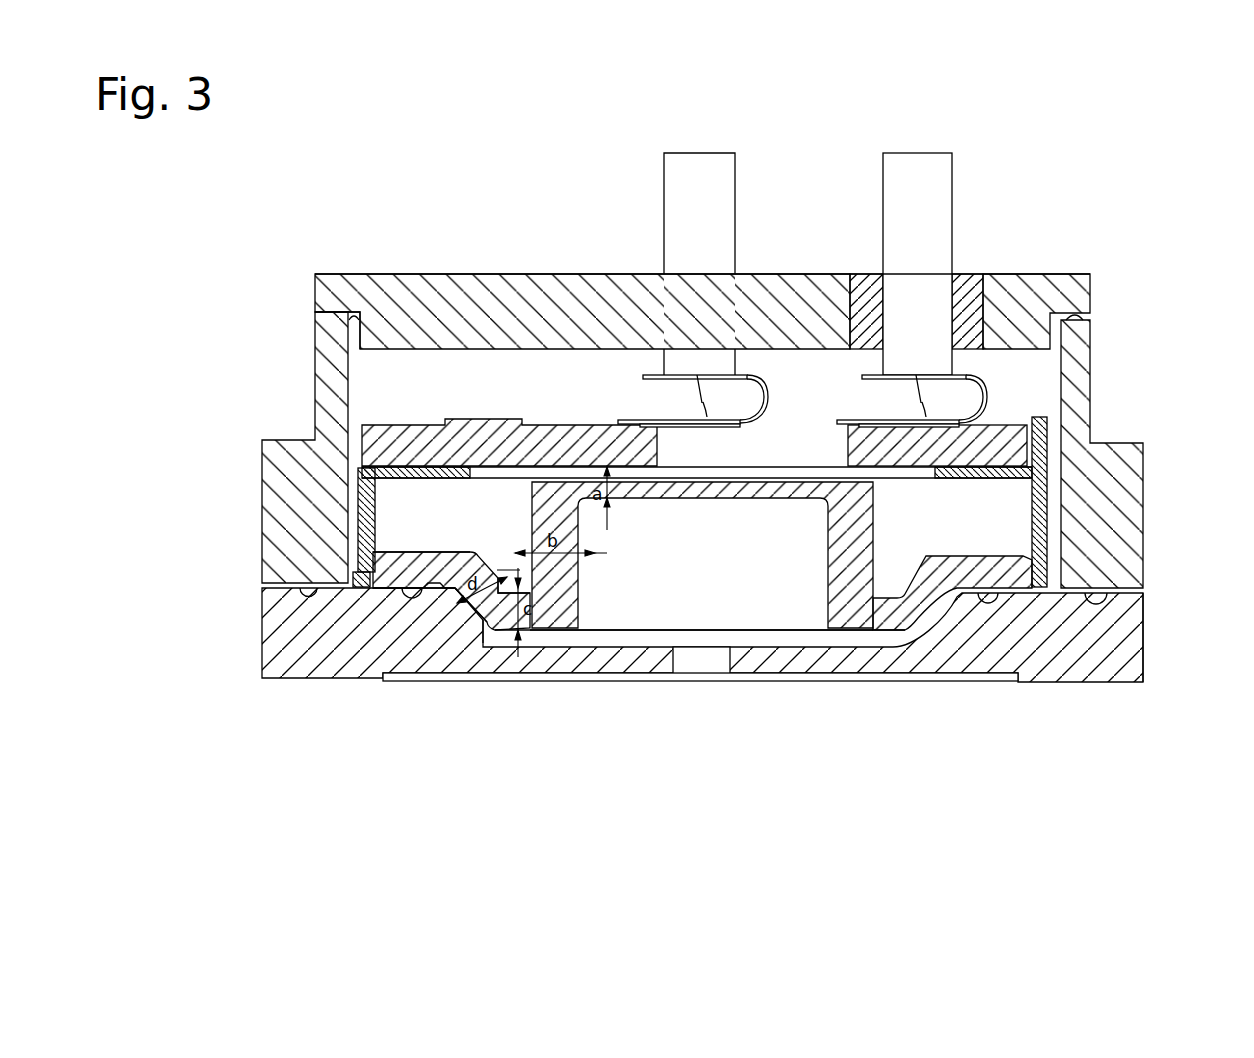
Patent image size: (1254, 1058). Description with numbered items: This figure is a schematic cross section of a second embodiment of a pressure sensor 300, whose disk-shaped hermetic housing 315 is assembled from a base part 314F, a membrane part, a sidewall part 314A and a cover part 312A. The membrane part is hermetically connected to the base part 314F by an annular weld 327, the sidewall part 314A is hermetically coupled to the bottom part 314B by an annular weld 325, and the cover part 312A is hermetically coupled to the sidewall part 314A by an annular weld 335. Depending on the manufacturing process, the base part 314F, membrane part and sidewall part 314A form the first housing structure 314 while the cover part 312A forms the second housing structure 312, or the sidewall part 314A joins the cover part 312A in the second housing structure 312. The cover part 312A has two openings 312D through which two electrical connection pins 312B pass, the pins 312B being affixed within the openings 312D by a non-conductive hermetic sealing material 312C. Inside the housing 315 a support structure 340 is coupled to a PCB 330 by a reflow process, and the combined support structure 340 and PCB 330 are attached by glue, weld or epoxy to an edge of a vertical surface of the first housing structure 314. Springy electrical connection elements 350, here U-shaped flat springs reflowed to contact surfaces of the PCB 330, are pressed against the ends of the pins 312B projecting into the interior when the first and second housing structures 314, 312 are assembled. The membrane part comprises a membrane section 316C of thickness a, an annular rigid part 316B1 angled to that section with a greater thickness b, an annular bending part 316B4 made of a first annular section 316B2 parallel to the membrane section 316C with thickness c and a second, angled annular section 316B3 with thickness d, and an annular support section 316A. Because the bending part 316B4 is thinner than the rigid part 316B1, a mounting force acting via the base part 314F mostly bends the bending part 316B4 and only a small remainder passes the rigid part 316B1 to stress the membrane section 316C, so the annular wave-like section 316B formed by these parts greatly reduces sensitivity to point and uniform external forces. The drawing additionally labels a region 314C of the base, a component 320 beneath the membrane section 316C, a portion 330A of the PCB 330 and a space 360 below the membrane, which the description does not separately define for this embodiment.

The pressure sensor 300 is at (378, 238).
The second housing structure 312 is at (483, 298).
The cover part 312A is at (342, 290).
The electrical connection pins 312B is at (917, 193).
The non-conductive hermetic sealing material 312C is at (965, 285).
The openings 312D is at (852, 303).
The first housing structure 314 is at (282, 655).
The sidewall part 314A is at (330, 495).
The bottom part 314B is at (902, 677).
The base center opening 314C is at (707, 657).
The base part 314F is at (1125, 652).
The hermetic housing 315 is at (1064, 289).
The annular support section 316A is at (410, 577).
The annular wave-like section 316B is at (857, 608).
The annular rigid part 316B1 is at (553, 577).
The first annular section 316B2 is at (503, 620).
The second annular section 316B3 is at (450, 603).
The annular bending part 316B4 is at (482, 616).
The membrane section 316C is at (632, 483).
The frame member 320 is at (657, 500).
The annular weld 325 is at (290, 600).
The annular weld 327 is at (410, 592).
The PCB 330 is at (1010, 446).
The holder end portion 330A is at (978, 432).
The annular weld 335 is at (333, 315).
The support structure 340 is at (1052, 478).
The springy electrical connection elements 350 is at (865, 403).
The cavity 360 is at (790, 593).